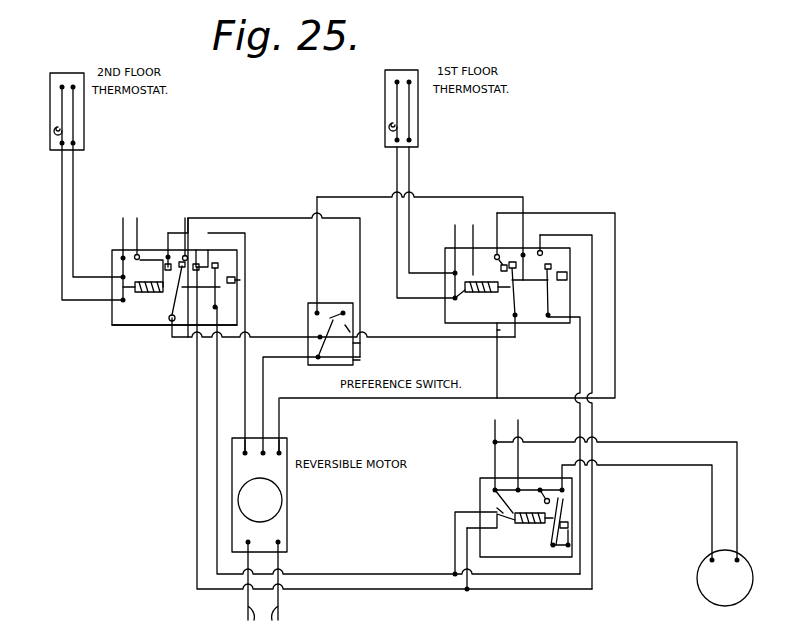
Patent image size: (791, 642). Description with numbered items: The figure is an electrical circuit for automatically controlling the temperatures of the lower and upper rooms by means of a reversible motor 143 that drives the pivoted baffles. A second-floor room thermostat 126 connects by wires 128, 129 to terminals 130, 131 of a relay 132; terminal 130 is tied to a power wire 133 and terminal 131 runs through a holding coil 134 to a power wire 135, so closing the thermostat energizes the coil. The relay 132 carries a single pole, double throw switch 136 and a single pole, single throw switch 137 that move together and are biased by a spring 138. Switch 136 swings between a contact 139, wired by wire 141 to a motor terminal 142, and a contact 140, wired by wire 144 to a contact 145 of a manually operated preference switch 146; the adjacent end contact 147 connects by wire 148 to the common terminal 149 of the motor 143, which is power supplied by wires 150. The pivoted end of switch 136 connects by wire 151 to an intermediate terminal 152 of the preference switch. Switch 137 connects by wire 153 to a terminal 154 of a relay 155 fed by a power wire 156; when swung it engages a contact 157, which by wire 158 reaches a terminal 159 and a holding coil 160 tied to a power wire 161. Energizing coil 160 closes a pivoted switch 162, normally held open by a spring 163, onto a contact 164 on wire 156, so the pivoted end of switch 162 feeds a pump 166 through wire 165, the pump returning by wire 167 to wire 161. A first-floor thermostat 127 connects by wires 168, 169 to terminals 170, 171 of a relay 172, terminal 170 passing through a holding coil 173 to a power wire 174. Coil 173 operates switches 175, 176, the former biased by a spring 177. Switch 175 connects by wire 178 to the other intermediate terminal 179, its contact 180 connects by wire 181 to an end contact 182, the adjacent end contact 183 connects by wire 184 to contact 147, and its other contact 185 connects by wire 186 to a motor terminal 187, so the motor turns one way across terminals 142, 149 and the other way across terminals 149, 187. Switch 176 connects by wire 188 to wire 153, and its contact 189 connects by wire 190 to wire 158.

The room thermostat 126 is at (84, 112).
The room thermostat 127 is at (418, 112).
The wire 128 is at (62, 203).
The wire 129 is at (77, 190).
The terminal 130 is at (121, 276).
The terminal 131 is at (122, 302).
The relay 132 is at (125, 325).
The power wire 133 is at (123, 222).
The holding coil 134 is at (152, 293).
The power wire 135 is at (135, 223).
The single pole, double throw switch 136 is at (175, 327).
The single pole, single throw switch 137 is at (217, 300).
The spring 138 is at (237, 280).
The contact 139 is at (142, 250).
The contact 140 is at (195, 260).
The wire 141 is at (246, 245).
The terminal 142 is at (245, 452).
The reversible motor 143 is at (290, 498).
The wire 144 is at (266, 217).
The contact 145 is at (342, 360).
The preference switch 146 is at (356, 345).
The end contact 147 is at (320, 362).
The wire 148 is at (278, 350).
The common terminal 149 is at (283, 438).
The power wires 150 is at (259, 591).
The wire 151 is at (256, 336).
The intermediate terminal 152 is at (318, 336).
The wire 153 is at (217, 490).
The terminal 154 is at (497, 510).
The relay 155 is at (488, 478).
The power wire 156 is at (520, 433).
The contact 157 is at (243, 243).
The wire 158 is at (197, 458).
The terminal 159 is at (496, 529).
The holding coil 160 is at (531, 526).
The power wire 161 is at (495, 427).
The pivoted switch 162 is at (565, 540).
The spring 163 is at (563, 520).
The contact 164 is at (547, 497).
The wire 165 is at (668, 466).
The pump 166 is at (698, 578).
The wire 167 is at (700, 440).
The wire 168 is at (394, 163).
The wire 169 is at (412, 165).
The terminal 170 is at (453, 299).
The terminal 171 is at (453, 272).
The relay 172 is at (453, 234).
The holding coil 173 is at (476, 293).
The power wire 174 is at (473, 226).
The switch 175 is at (514, 297).
The switch 176 is at (560, 290).
The spring 177 is at (567, 268).
The wire 178 is at (507, 338).
The intermediate terminal 179 is at (350, 330).
The contact 180 is at (527, 245).
The wire 181 is at (496, 196).
The end contact 182 is at (316, 313).
The end contact 183 is at (342, 312).
The wire 184 is at (331, 334).
The contact 185 is at (499, 255).
The wire 186 is at (591, 212).
The terminal 187 is at (283, 452).
The wire 188 is at (581, 360).
The contact 189 is at (550, 258).
The wire 190 is at (593, 327).